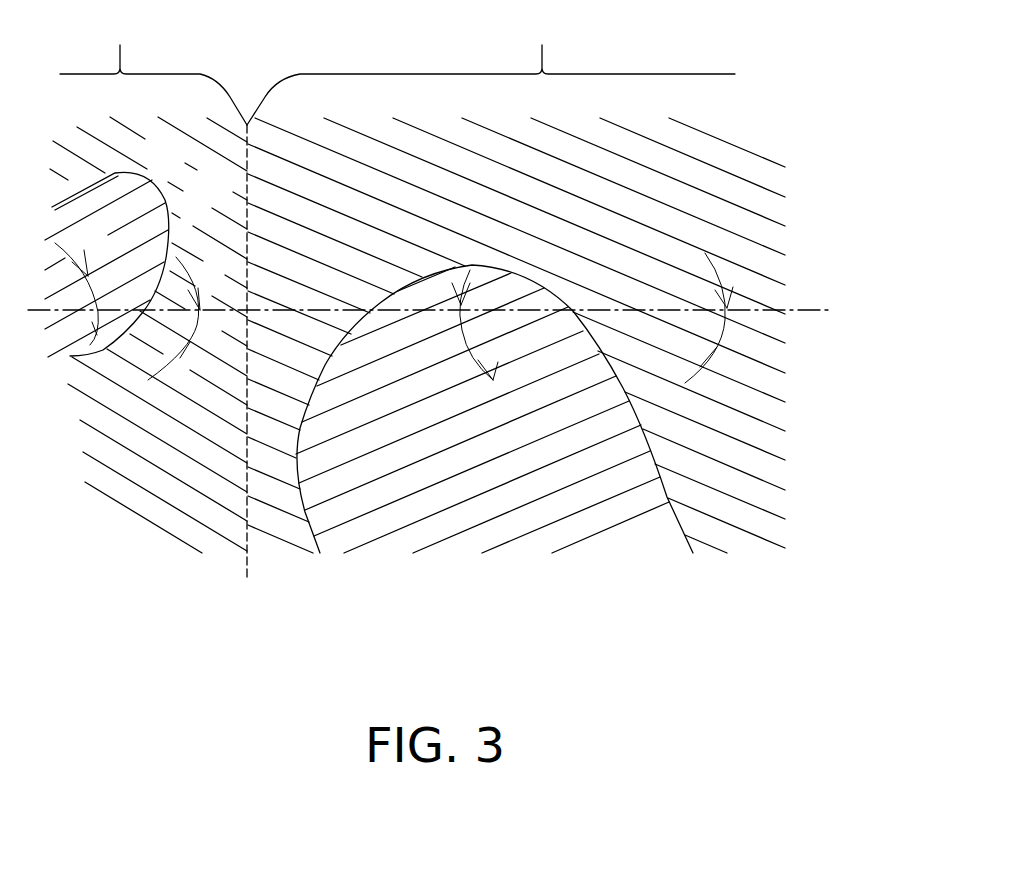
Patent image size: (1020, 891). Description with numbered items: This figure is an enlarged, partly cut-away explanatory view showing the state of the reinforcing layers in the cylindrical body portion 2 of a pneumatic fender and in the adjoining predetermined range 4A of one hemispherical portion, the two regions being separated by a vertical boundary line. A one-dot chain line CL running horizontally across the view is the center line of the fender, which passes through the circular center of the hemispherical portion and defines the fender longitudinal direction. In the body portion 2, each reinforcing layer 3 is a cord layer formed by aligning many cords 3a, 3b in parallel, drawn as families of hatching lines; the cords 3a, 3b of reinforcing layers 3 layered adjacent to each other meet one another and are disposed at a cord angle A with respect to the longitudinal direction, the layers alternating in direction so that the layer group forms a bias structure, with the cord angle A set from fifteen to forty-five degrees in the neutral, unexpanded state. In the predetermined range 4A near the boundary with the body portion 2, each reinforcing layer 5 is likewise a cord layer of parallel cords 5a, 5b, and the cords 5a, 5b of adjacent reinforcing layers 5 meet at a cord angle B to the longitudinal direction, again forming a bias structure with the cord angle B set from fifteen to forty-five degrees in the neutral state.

The body portion 2 is at (516, 296).
The predetermined range 4A is at (153, 68).
The reinforcing layer 3 is at (400, 553).
The cord 3a is at (478, 498).
The cord 3b is at (755, 415).
The reinforcing layer 5 is at (53, 342).
The cord 5a is at (130, 215).
The cord 5b is at (128, 480).
The center line CL is at (815, 317).
The cord angle A is at (598, 318).
The cord angle B is at (135, 311).